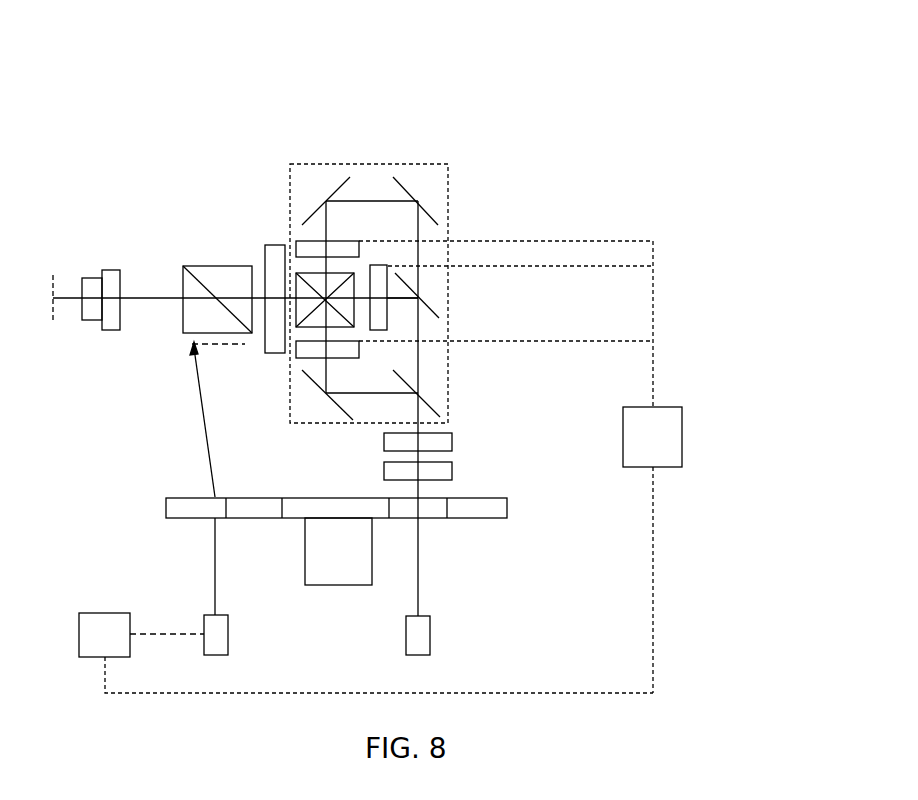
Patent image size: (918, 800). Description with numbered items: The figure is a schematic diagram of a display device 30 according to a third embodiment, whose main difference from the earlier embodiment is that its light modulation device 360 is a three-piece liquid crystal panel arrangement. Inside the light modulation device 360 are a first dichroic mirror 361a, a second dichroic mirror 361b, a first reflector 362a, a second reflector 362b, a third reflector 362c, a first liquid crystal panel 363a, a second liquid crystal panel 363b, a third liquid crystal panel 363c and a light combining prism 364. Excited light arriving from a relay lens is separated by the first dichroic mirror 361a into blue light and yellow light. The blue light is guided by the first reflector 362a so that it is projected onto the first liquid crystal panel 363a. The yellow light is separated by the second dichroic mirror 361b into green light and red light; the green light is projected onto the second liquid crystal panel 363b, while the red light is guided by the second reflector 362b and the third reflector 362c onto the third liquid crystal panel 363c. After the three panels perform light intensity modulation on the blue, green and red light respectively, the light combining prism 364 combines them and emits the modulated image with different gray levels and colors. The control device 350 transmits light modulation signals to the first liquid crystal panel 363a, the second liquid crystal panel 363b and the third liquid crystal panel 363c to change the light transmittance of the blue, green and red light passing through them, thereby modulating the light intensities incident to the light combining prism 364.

The display device 30 is at (402, 63).
The control device 350 is at (684, 437).
The light modulation device 360 is at (333, 425).
The first dichroic mirror 361a is at (440, 392).
The second dichroic mirror 361b is at (423, 299).
The first reflector 362a is at (323, 400).
The second reflector 362b is at (430, 208).
The third reflector 362c is at (312, 212).
The first liquid crystal panel 363a is at (313, 357).
The second liquid crystal panel 363b is at (387, 315).
The third liquid crystal panel 363c is at (308, 238).
The light combining prism 364 is at (338, 273).